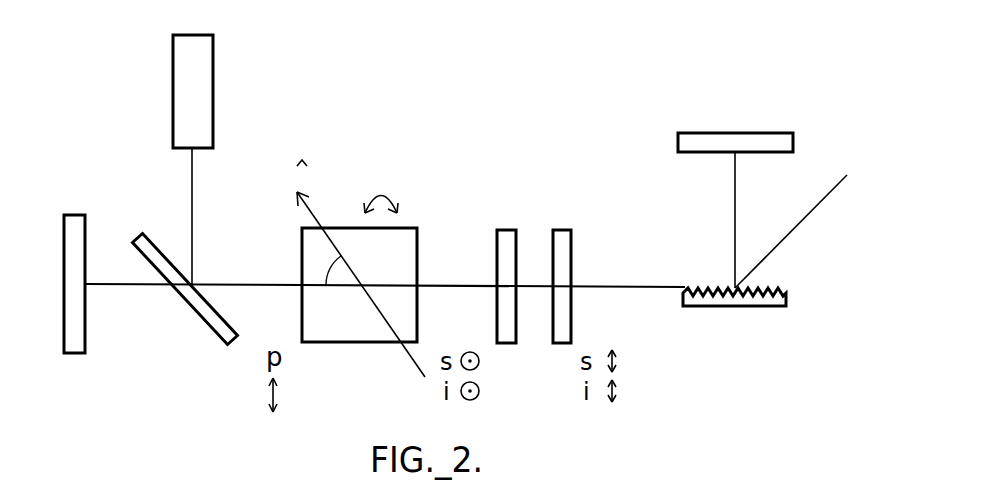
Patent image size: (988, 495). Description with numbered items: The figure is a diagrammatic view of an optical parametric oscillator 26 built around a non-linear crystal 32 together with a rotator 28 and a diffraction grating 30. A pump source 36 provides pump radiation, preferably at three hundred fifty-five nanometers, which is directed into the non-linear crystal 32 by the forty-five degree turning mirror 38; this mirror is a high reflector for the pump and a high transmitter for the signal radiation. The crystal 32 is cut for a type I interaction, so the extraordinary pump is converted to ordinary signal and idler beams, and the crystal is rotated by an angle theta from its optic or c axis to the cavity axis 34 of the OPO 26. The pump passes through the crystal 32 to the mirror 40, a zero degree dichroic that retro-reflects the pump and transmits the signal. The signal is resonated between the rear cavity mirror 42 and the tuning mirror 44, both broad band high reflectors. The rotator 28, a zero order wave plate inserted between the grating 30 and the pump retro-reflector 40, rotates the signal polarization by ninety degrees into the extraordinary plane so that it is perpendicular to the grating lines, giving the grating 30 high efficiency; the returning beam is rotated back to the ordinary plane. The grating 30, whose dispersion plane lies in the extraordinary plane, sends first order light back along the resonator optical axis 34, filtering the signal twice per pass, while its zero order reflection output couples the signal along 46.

The optical parametric oscillator 26 is at (473, 110).
The rotator 28 is at (562, 238).
The diffraction grating 30 is at (767, 305).
The non-linear crystal 32 is at (380, 343).
The resonator optical axis 34 is at (125, 286).
The pump source 36 is at (205, 73).
The 45° turning mirror 38 is at (228, 340).
The mirror 40 is at (504, 343).
The rear cavity mirror 42 is at (73, 353).
The tuning mirror 44 is at (704, 133).
The zero order reflection output path 46 is at (787, 237).